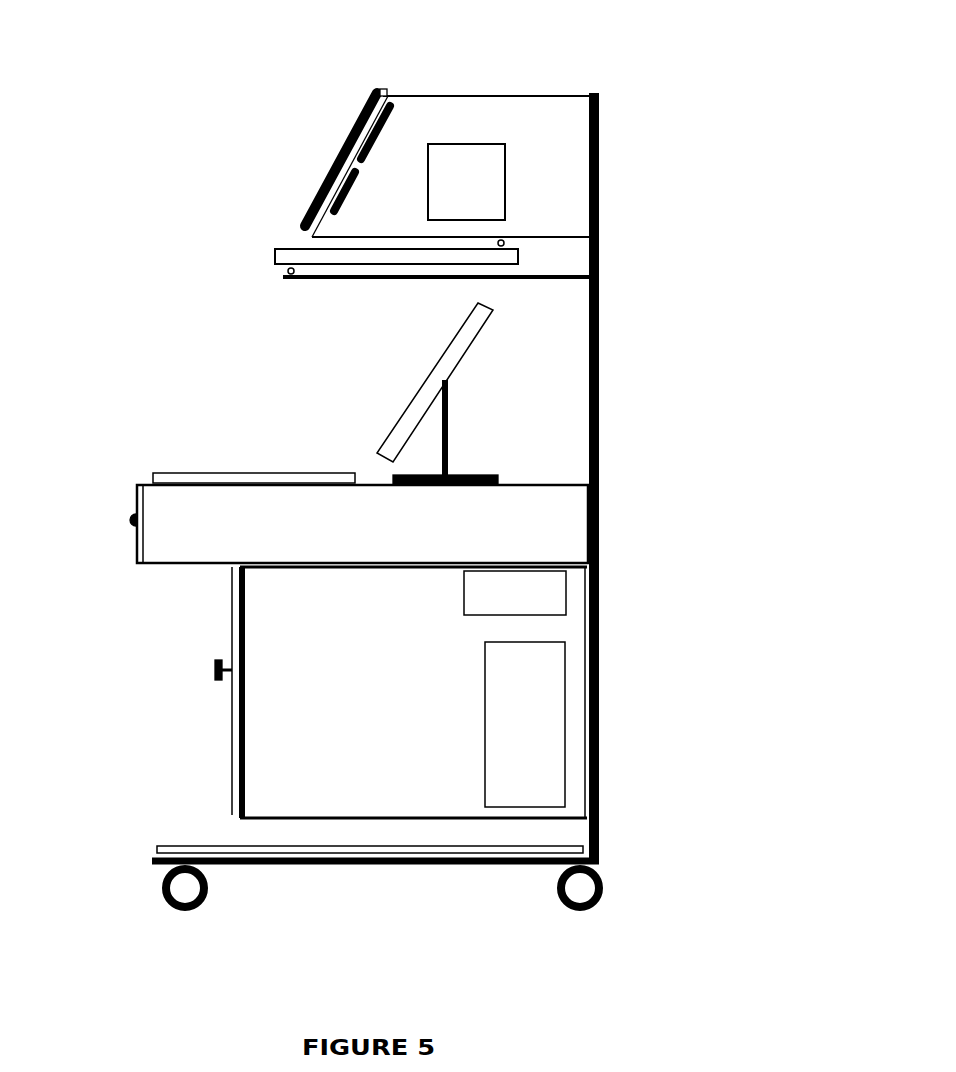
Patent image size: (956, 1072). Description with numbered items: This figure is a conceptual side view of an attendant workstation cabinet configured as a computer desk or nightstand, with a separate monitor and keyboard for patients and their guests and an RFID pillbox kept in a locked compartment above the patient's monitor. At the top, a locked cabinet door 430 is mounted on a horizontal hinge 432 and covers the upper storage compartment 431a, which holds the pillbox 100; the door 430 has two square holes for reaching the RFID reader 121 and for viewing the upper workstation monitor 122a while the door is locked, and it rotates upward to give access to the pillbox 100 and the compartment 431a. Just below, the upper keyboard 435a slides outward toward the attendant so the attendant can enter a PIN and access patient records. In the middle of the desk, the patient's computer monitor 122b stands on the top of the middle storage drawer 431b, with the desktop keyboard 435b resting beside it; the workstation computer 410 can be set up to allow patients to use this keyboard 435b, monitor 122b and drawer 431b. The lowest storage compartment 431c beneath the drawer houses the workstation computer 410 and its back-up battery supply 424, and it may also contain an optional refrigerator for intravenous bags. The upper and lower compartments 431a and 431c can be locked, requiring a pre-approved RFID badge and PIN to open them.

The pillbox 100 is at (465, 155).
The RFID reader 121 is at (362, 170).
The workstation monitor 122a is at (398, 108).
The computer monitor 122b is at (430, 388).
The workstation computer 410 is at (526, 727).
The back-up battery supply 424 is at (552, 597).
The locked cabinet door 430 is at (320, 192).
The upper storage compartment 431a is at (525, 182).
The middle storage drawer 431b is at (227, 537).
The lowest storage compartment 431c is at (300, 740).
The horizontal hinge 432 is at (387, 90).
The upper keyboard 435a is at (273, 248).
The desktop keyboard 435b is at (192, 480).